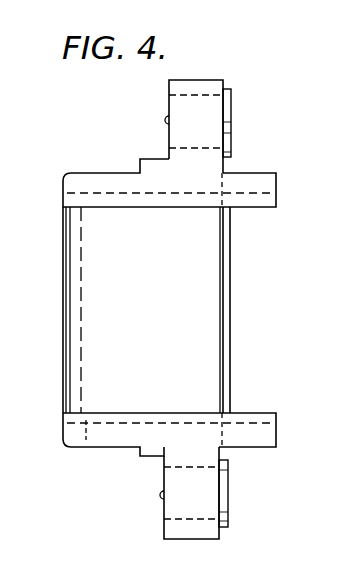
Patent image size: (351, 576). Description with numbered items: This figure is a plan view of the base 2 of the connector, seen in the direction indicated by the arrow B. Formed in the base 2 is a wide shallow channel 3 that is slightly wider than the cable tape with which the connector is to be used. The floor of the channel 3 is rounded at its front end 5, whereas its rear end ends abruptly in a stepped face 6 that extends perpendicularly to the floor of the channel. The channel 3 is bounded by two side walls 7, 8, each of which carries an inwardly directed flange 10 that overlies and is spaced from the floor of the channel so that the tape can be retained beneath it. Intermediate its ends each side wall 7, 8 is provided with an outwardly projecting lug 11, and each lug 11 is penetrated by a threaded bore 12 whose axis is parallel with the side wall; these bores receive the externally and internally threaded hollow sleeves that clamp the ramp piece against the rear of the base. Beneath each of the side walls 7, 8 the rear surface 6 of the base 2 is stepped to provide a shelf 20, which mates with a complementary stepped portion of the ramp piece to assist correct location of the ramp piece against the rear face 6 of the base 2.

The base 2 is at (137, 150).
The channel 3 is at (87, 314).
The rounded front end 5 is at (65, 228).
The stepped rear face 6 is at (232, 386).
The side wall 7 is at (238, 195).
The side wall 8 is at (85, 445).
The inwardly directed flange 10 is at (263, 207).
The outwardly projecting lug 11 is at (188, 86).
The threaded bore 12 is at (202, 95).
The shelf 20 is at (228, 300).
The viewing direction B is at (275, 305).